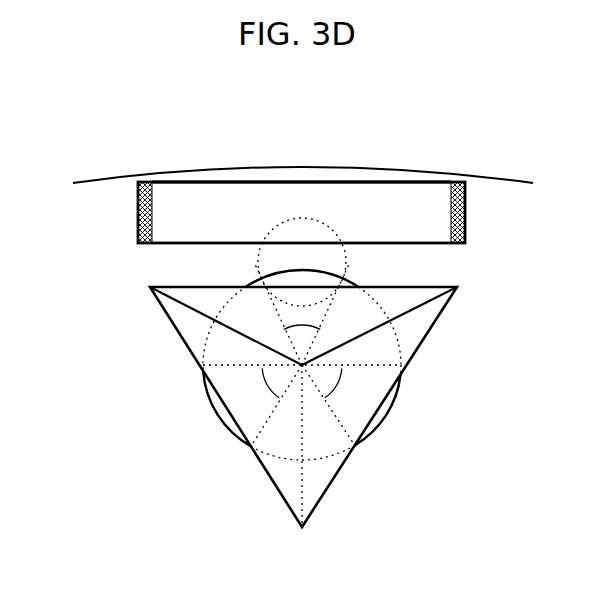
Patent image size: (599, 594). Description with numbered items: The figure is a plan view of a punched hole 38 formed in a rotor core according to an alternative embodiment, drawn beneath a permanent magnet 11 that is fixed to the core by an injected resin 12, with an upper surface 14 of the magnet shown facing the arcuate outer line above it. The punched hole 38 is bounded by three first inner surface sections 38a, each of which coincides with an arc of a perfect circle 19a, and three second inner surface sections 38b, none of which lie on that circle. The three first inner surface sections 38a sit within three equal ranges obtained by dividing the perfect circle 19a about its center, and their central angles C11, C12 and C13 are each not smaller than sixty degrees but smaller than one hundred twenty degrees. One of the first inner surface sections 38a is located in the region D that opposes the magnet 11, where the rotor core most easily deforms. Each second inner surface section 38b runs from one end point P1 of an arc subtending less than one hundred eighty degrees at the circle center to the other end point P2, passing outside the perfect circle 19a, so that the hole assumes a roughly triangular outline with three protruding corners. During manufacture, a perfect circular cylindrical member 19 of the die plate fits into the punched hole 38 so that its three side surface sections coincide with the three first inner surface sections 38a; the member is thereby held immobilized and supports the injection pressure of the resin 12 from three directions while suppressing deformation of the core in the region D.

The permanent magnet 11 is at (228, 216).
The resin 12 is at (470, 207).
The magnet outer surface 14 is at (324, 183).
The perfect circular cylindrical member 19 is at (228, 417).
The perfect circle 19a is at (287, 466).
The punched hole 38 is at (400, 405).
The first inner surface section 38a is at (353, 279).
The second inner surface section 38b is at (165, 315).
The region opposing the magnet D is at (262, 250).
The end point of arc P1 is at (355, 447).
The other end point of arc P2 is at (251, 447).
The central angle C11 is at (302, 315).
The central angle C12 is at (343, 405).
The central angle C13 is at (263, 405).